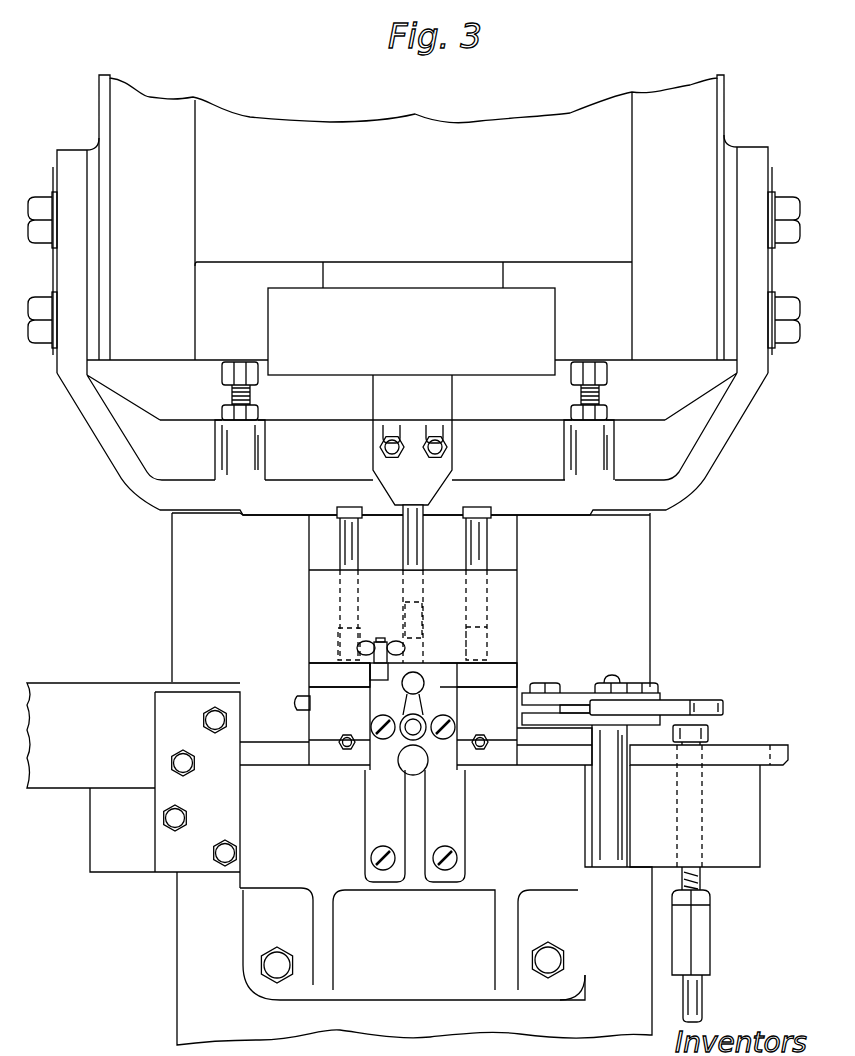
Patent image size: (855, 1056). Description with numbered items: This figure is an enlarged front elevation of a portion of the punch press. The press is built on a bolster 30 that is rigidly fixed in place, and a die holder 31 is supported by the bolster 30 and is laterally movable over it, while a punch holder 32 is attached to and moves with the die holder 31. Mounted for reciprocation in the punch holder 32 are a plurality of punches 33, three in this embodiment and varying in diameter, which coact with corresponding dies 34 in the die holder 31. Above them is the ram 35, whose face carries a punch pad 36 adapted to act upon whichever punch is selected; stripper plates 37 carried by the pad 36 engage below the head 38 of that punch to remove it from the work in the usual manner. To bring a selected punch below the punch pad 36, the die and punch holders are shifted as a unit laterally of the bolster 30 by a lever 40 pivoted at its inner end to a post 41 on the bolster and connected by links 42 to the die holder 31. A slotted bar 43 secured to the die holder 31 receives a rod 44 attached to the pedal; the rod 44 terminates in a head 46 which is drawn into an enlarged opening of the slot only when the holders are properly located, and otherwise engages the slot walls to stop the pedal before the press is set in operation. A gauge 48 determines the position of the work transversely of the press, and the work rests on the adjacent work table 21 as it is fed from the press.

The work table 21 is at (92, 668).
The bolster 30 is at (290, 860).
The die holder 31 is at (416, 784).
The punch holder 32 is at (503, 603).
The punches 33 is at (410, 545).
The dies 34 is at (337, 687).
The ram 35 is at (414, 295).
The punch pad 36 is at (411, 331).
The stripper plates 37 is at (412, 440).
The head 38 is at (350, 507).
The lever 40 is at (676, 709).
The post 41 is at (608, 757).
The links 42 is at (565, 715).
The slotted bar 43 is at (781, 758).
The rod 44 is at (694, 878).
The head 46 is at (690, 731).
The gauge 48 is at (412, 674).